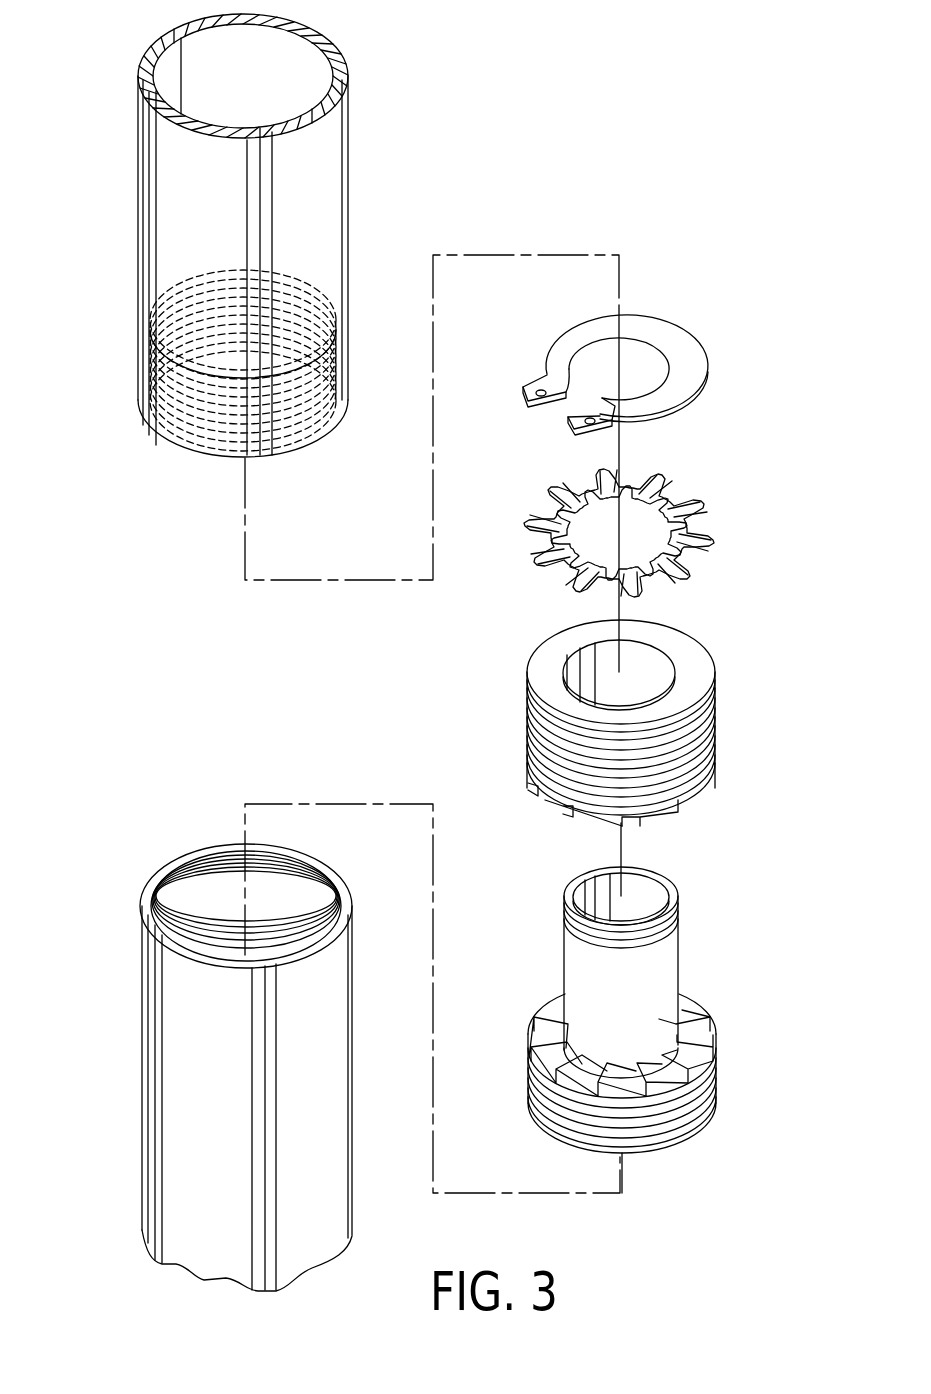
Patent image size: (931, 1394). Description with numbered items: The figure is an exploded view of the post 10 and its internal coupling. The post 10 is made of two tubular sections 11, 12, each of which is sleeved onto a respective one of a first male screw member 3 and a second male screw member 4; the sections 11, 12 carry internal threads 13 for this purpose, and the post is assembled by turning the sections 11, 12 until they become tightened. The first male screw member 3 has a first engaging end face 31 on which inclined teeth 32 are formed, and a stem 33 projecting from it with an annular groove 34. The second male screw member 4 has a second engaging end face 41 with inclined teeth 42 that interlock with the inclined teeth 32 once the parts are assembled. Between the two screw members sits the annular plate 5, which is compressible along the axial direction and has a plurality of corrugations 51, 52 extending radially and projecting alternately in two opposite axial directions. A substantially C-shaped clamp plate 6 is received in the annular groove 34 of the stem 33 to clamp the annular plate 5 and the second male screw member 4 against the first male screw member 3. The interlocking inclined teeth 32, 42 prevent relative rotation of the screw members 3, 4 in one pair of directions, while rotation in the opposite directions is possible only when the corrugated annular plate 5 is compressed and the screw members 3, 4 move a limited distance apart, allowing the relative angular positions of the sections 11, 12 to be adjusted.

The post 10 is at (122, 338).
The section 11 is at (352, 965).
The section 12 is at (348, 190).
The inner thread 13 is at (198, 432).
The first male screw member 3 is at (717, 1078).
The first engaging end face 31 is at (707, 1035).
The inclined teeth 32 is at (713, 1016).
The stem 33 is at (676, 967).
The annular groove 34 is at (676, 953).
The second male screw member 4 is at (716, 732).
The second engaging end face 41 is at (682, 804).
The inclined teeth 42 is at (668, 829).
The annular plate 5 is at (712, 540).
The corrugations 51 is at (706, 505).
The corrugations 52 is at (712, 562).
The clamp plate 6 is at (693, 386).